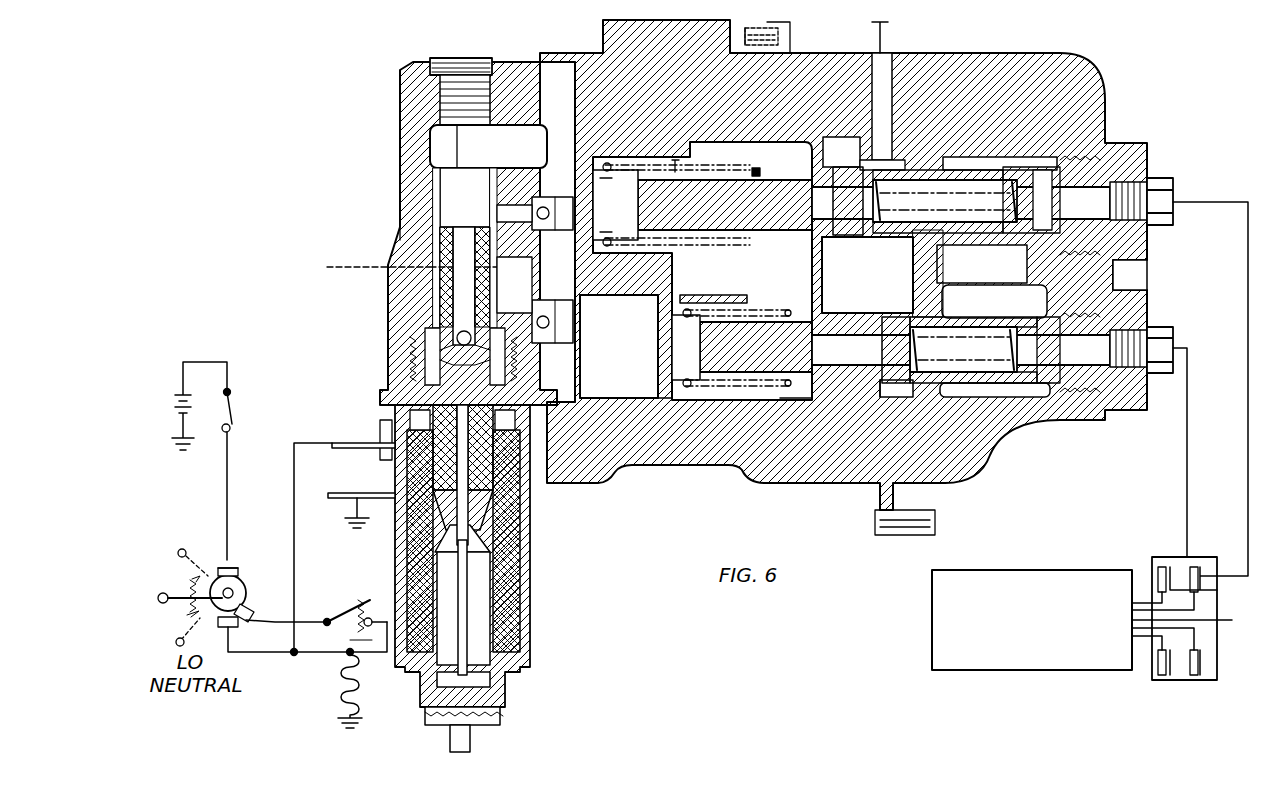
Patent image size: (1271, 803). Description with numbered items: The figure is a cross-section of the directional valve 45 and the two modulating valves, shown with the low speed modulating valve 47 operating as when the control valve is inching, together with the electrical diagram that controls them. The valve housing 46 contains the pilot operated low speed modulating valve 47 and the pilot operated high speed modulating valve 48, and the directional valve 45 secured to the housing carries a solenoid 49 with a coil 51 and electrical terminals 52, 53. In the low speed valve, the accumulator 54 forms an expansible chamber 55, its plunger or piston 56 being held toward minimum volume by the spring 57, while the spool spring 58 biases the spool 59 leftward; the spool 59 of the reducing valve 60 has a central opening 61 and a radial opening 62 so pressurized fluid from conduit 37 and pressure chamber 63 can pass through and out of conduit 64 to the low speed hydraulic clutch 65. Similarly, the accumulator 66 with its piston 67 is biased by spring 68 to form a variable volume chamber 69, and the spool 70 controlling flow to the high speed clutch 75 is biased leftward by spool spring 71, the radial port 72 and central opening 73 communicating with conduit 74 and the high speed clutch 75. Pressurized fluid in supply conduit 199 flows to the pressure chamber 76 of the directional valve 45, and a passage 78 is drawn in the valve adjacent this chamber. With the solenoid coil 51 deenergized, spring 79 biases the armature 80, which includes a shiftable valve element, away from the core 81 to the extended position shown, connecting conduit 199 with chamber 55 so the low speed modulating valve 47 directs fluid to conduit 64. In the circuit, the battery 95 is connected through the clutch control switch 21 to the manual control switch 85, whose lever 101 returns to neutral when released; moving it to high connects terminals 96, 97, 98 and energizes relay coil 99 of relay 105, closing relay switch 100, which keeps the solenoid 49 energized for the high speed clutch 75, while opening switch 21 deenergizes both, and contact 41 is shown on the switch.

The clutch control switch 21 is at (236, 408).
The clutch supply conduit 37 is at (885, 28).
The contact 41 is at (180, 550).
The directional valve 45 is at (400, 182).
The valve housing 46 is at (1022, 70).
The low speed modulating valve 47 is at (800, 385).
The high speed modulating valve 48 is at (815, 235).
The solenoid 49 is at (393, 550).
The coil 51 is at (500, 557).
The electrical terminal 52 is at (358, 443).
The electrical terminal 53 is at (355, 493).
The accumulator 54 is at (676, 402).
The expansible chamber 55 is at (608, 372).
The plunger or piston 56 is at (720, 395).
The spring 57 is at (788, 310).
The spool spring 58 is at (992, 332).
The spool 59 is at (887, 315).
The reducing valve 60 is at (932, 395).
The central opening 61 is at (840, 345).
The radial opening 62 is at (880, 398).
The pressure chamber 63 is at (890, 253).
The conduit 64 is at (1187, 447).
The low speed hydraulic clutch 65 is at (1152, 557).
The accumulator 66 is at (668, 147).
The plunger or piston 67 is at (643, 155).
The spring 68 is at (758, 176).
The variable volume chamber 69 is at (575, 155).
The spool 70 is at (770, 228).
The spool spring 71 is at (950, 185).
The radial port 72 is at (843, 170).
The central opening 73 is at (800, 195).
The conduit 74 is at (1230, 202).
The high speed clutch 75 is at (1220, 600).
The pressure chamber 76 is at (400, 264).
The bearing passage 78 is at (515, 300).
The spring 79 is at (440, 328).
The armature 80 is at (480, 597).
The core 81 is at (483, 486).
The manual control switch 85 is at (248, 582).
The battery 95 is at (175, 393).
The terminal 96 is at (236, 568).
The terminal 97 is at (268, 624).
The terminal 98 is at (230, 630).
The relay coil 99 is at (338, 675).
The relay switch 100 is at (342, 618).
The manual control lever 101 is at (153, 665).
The relay 105 is at (364, 675).
The supply conduit 199 is at (327, 267).